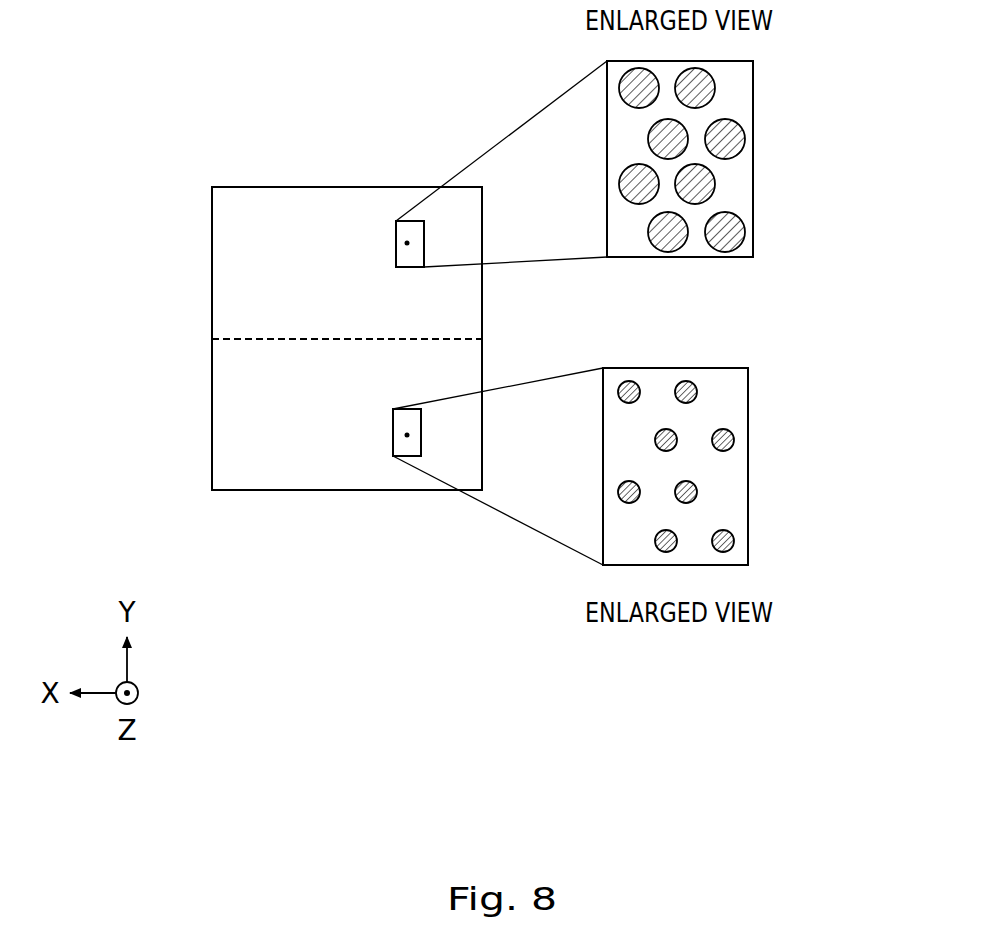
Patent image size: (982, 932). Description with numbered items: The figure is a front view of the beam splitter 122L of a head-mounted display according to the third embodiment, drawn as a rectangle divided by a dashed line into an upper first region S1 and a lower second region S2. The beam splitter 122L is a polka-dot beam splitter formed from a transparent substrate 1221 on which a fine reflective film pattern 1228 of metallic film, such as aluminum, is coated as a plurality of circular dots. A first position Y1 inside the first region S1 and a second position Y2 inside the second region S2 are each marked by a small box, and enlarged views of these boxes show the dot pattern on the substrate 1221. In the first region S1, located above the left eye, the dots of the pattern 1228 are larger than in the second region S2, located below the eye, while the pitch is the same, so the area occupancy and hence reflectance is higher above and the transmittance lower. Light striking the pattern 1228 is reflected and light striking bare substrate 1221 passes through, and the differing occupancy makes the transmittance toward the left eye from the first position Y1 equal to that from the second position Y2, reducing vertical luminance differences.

The beam splitter 122L is at (283, 482).
The substrate 1221 is at (742, 181).
The reflective film pattern 1228 is at (715, 86).
The first region S1 is at (256, 255).
The second region S2 is at (256, 417).
The first position Y1 is at (407, 243).
The second position Y2 is at (407, 435).